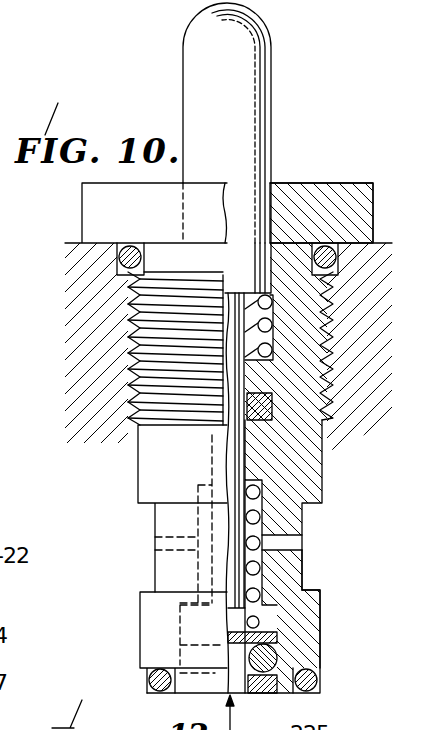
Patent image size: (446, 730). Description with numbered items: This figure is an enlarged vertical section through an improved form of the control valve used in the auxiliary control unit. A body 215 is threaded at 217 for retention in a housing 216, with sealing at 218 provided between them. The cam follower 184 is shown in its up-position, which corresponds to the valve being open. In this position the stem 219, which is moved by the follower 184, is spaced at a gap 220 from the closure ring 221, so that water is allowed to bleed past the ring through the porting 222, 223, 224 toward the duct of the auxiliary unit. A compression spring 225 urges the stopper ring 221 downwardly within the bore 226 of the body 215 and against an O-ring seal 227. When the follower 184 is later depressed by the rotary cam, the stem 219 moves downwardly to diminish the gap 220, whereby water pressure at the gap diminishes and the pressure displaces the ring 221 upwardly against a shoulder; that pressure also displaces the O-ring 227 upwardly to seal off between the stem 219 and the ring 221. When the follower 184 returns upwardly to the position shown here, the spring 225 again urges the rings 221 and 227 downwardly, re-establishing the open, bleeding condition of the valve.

The cam follower 184 is at (185, 76).
The body 215 is at (290, 466).
The housing 216 is at (72, 316).
The threads 217 is at (130, 366).
The sealing 218 is at (120, 251).
The stem 219 is at (230, 516).
The gap 220 is at (232, 618).
The closure ring 221 is at (280, 636).
The porting 222 is at (238, 666).
The porting 223 is at (252, 587).
The porting 224 is at (278, 546).
The compression spring 225 is at (262, 520).
The bore 226 is at (290, 622).
The O-ring seal 227 is at (290, 656).